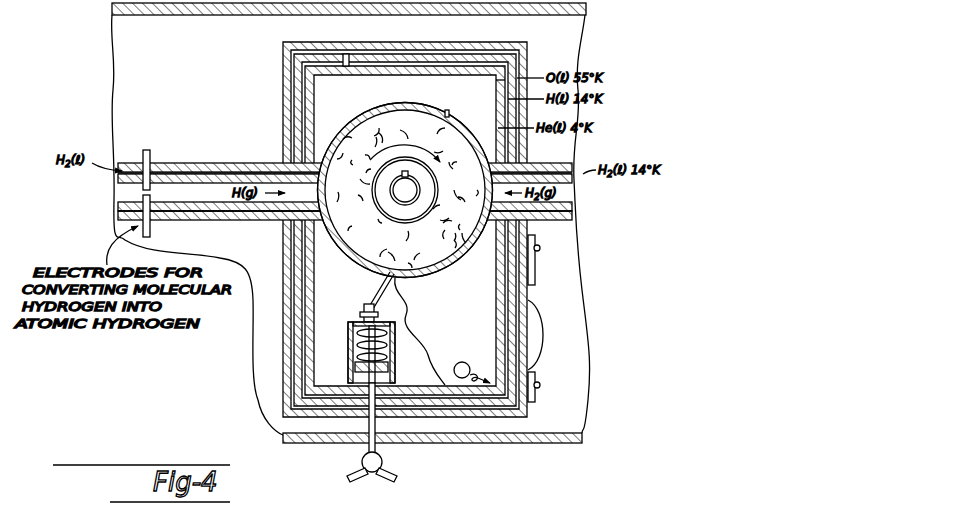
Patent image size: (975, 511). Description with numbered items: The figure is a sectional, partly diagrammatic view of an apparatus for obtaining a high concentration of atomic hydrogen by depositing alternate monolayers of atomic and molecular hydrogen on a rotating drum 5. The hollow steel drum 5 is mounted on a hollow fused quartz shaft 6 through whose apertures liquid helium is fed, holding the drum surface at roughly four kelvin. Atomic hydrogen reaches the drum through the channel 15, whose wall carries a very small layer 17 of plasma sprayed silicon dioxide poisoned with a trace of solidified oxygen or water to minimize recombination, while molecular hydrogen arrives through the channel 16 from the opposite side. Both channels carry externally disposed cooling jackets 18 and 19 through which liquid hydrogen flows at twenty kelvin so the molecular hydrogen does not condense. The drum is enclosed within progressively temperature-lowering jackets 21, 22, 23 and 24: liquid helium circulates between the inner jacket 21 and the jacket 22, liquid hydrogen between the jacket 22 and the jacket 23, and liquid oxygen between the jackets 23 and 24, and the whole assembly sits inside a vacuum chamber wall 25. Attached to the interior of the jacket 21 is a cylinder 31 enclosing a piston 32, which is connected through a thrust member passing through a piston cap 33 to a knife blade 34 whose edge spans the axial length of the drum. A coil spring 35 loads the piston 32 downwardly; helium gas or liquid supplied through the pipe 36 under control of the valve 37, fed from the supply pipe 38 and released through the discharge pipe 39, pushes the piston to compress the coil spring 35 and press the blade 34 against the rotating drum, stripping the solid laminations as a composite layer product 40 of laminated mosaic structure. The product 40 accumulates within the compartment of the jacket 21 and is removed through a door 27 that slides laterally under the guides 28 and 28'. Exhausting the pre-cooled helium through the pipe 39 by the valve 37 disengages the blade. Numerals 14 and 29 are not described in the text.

The rotating drum 5 is at (438, 272).
The hollow shaft 6 is at (405, 190).
The wheel rim projection 14 is at (447, 111).
The channel 15 is at (120, 177).
The channel 16 is at (566, 180).
The layer of plasma sprayed silicon dioxide 17 is at (122, 200).
The cooling jacket 18 is at (228, 163).
The cooling jacket 19 is at (556, 165).
The inner jacket 21 is at (498, 87).
The jacket 22 is at (508, 100).
The jacket 23 is at (530, 52).
The jacket 24 is at (522, 66).
The vacuum chamber wall 25 is at (587, 12).
The door 27 is at (542, 325).
The guide 28 is at (547, 260).
The guide 28' is at (548, 387).
The vent stub 29 is at (346, 54).
The cylinder 31 is at (396, 345).
The piston 32 is at (371, 373).
The piston cap 33 is at (362, 310).
The knife blade 34 is at (378, 296).
The coil spring 35 is at (348, 340).
The pipe 36 is at (368, 426).
The valve 37 is at (363, 463).
The supply pipe 38 is at (352, 480).
The discharge pipe 39 is at (388, 479).
The composite layer product 40 is at (410, 309).